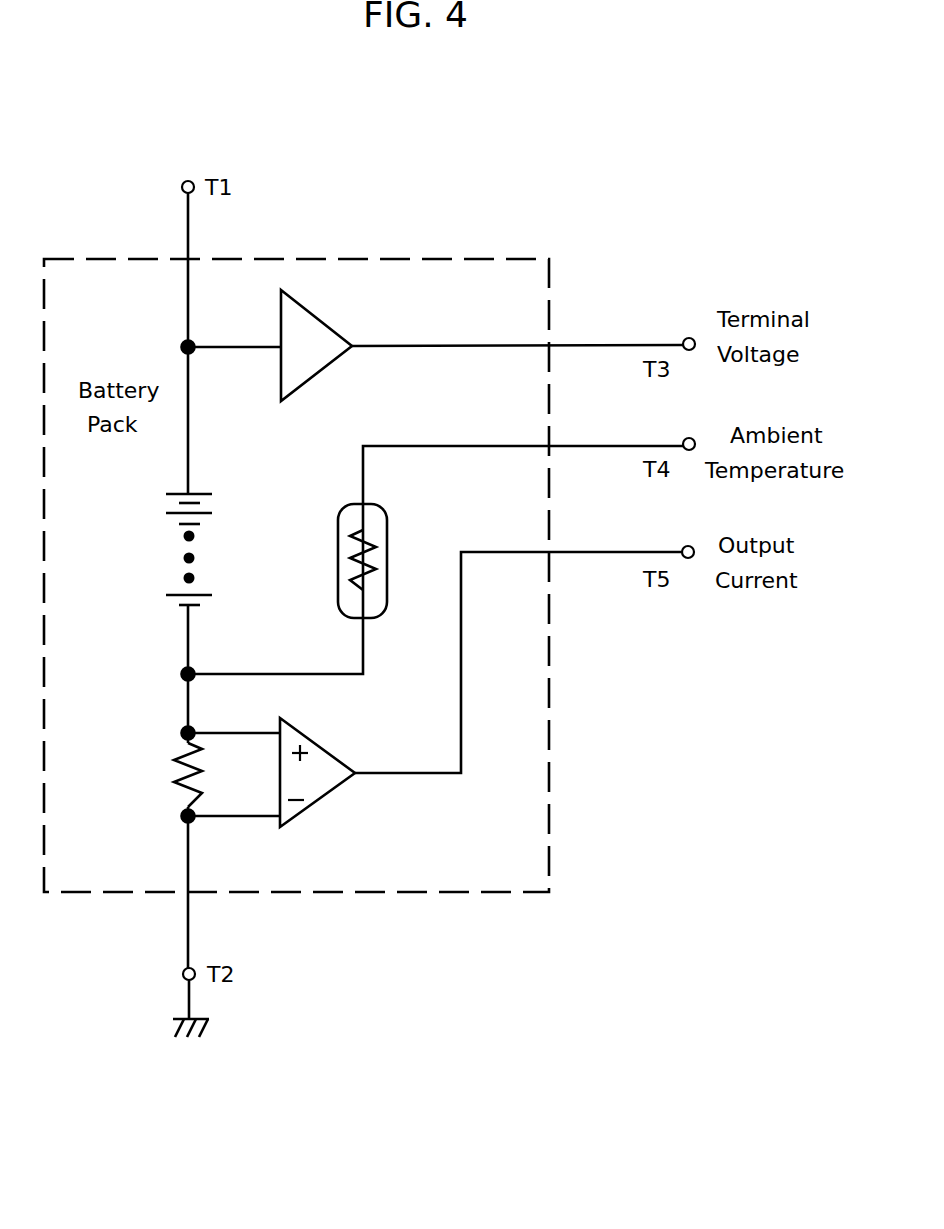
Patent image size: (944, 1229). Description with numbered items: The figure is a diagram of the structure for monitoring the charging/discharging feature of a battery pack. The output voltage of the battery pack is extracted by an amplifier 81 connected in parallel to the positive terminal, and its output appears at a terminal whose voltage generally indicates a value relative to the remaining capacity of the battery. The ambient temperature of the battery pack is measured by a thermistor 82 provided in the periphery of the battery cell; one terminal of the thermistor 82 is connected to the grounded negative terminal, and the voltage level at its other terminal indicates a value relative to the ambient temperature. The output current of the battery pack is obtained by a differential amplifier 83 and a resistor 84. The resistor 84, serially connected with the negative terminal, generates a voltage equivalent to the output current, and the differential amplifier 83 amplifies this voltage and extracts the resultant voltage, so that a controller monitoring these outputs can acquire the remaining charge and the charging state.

The amplifier 81 is at (325, 328).
The thermistor 82 is at (383, 562).
The differential amplifier 83 is at (328, 755).
The resistor 84 is at (177, 772).